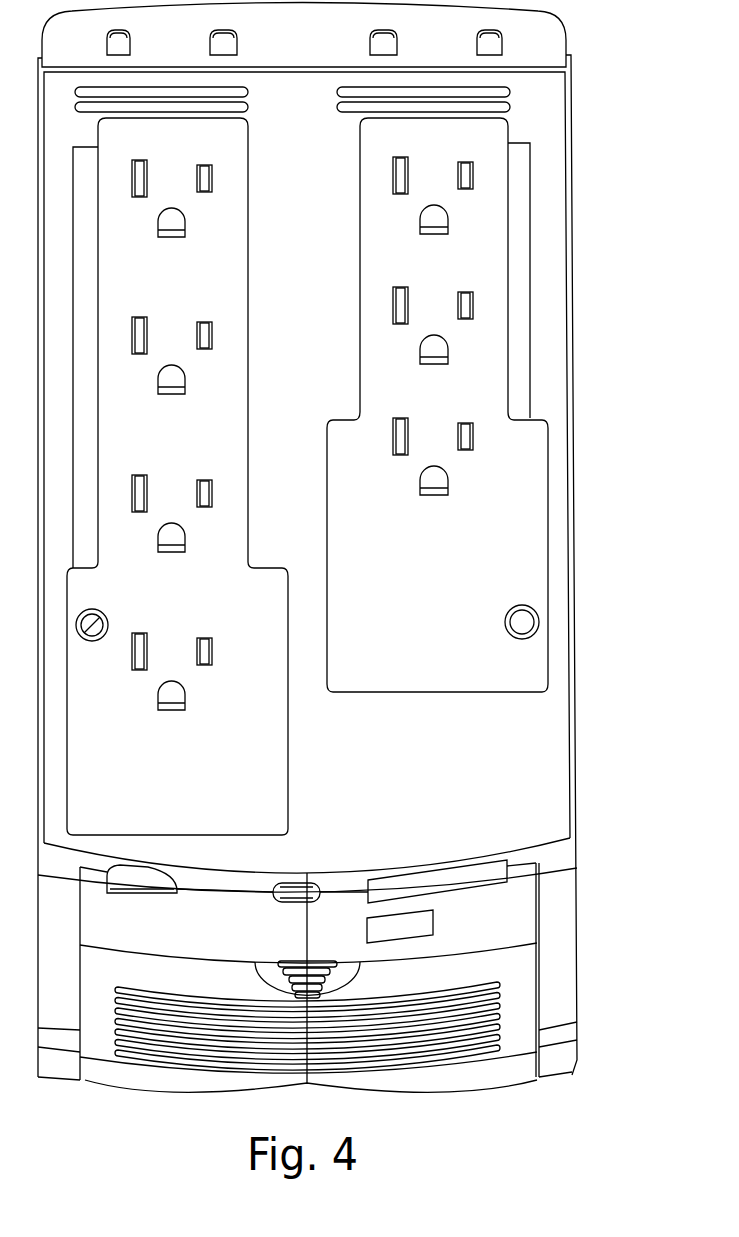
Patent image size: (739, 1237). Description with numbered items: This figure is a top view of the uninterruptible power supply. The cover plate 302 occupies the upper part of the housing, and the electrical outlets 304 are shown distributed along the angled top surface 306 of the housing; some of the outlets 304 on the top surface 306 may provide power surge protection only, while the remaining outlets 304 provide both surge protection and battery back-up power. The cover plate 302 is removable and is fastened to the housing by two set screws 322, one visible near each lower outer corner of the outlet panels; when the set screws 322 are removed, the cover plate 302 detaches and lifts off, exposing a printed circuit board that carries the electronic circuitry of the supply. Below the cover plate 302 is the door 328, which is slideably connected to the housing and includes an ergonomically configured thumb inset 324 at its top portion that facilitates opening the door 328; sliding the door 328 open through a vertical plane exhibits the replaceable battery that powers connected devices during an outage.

The cover plate 302 is at (577, 838).
The electrical outlets 304 is at (476, 437).
The angled top surface 306 is at (430, 803).
The set screws 322 is at (90, 643).
The thumb inset 324 is at (270, 972).
The door 328 is at (550, 963).